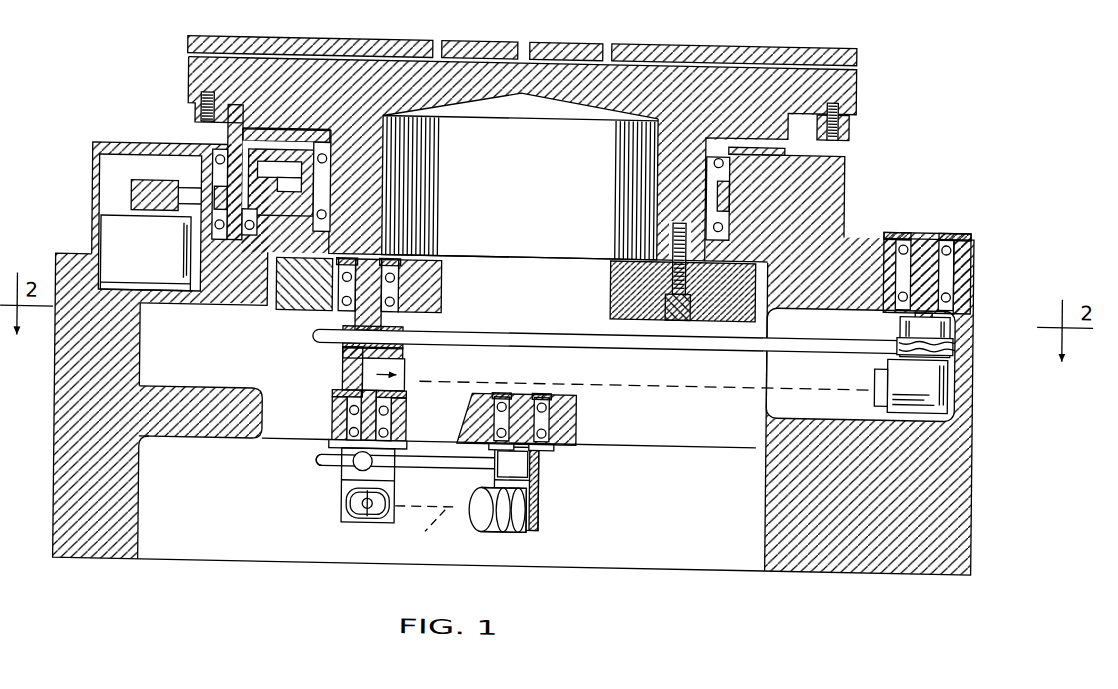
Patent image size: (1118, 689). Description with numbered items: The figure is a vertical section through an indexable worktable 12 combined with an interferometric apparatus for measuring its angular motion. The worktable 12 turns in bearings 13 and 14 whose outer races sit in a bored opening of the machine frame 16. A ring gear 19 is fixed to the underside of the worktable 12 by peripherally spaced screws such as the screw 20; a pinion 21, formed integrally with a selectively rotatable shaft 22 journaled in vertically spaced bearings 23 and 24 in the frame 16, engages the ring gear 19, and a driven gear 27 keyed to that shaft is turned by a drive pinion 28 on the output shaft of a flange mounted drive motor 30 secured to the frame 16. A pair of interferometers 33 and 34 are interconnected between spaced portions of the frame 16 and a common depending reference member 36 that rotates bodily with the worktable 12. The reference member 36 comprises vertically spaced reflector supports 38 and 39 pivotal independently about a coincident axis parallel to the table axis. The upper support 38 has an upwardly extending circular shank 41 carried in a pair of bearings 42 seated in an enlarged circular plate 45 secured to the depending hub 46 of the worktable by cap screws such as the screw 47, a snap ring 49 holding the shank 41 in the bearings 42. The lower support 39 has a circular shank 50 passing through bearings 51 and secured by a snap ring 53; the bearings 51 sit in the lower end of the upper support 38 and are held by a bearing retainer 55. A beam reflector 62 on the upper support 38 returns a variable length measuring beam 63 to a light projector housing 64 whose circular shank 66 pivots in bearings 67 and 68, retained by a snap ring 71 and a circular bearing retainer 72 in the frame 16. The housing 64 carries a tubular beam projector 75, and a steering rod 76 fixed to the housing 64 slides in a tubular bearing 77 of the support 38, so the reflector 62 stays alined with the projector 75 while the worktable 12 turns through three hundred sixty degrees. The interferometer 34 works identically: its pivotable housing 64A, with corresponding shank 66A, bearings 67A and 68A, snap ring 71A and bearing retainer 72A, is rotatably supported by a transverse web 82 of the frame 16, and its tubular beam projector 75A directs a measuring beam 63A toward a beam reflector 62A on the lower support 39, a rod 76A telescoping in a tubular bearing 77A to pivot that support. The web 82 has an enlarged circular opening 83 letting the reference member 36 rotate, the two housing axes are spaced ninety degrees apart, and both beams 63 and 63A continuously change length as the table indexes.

The indexable worktable 12 is at (843, 83).
The bearing 13 is at (716, 159).
The bearing 14 is at (720, 224).
The machine frame 16 is at (949, 490).
The ring gear 19 is at (846, 124).
The screw 20 is at (197, 124).
The pinion 21 is at (245, 117).
The selectively rotatable shaft 22 is at (224, 140).
The bearing 23 is at (241, 156).
The bearing 24 is at (215, 239).
The driven gear 27 is at (248, 238).
The drive pinion 28 is at (130, 202).
The drive motor 30 is at (126, 241).
The interferometer 33 is at (866, 359).
The interferometer 34 is at (558, 465).
The common reference member 36 is at (358, 533).
The upper reflector support 38 is at (343, 354).
The lower reflector support 39 is at (340, 493).
The circular shank 41 is at (410, 300).
The bearings 42 is at (345, 282).
The enlarged circular plate 45 is at (622, 293).
The depending hub 46 is at (678, 190).
The cap screw 47 is at (676, 228).
The snap ring 49 is at (405, 273).
The circular shank 50 is at (320, 460).
The bearings 51 is at (400, 413).
The snap ring 53 is at (350, 404).
The bearing retainer 55 is at (404, 449).
The beam reflector 62 is at (405, 365).
The beam reflector 62A is at (375, 521).
The variable length measuring beam 63 is at (716, 384).
The variable length measuring beam 63A is at (433, 530).
The light projector housing 64 is at (938, 395).
The pivotable housing 64A is at (537, 494).
The circular shank 66 is at (956, 267).
The circular shank 66A is at (500, 396).
The bearing 67 is at (958, 244).
The bearing 67A is at (580, 414).
The bearing 68 is at (952, 291).
The bearing 68A is at (576, 444).
The snap ring 71 is at (929, 221).
The snap ring 71A is at (534, 371).
The circular bearing retainer 72 is at (957, 224).
The circular bearing retainer 72A is at (547, 395).
The tubular beam projector 75 is at (880, 395).
The tubular beam projector 75A is at (485, 537).
The steering rod 76 is at (649, 340).
The rod 76A is at (468, 462).
The tubular bearing 77 is at (408, 332).
The tubular bearing 77A is at (356, 470).
The transverse web 82 is at (582, 380).
The enlarged circular opening 83 is at (263, 416).